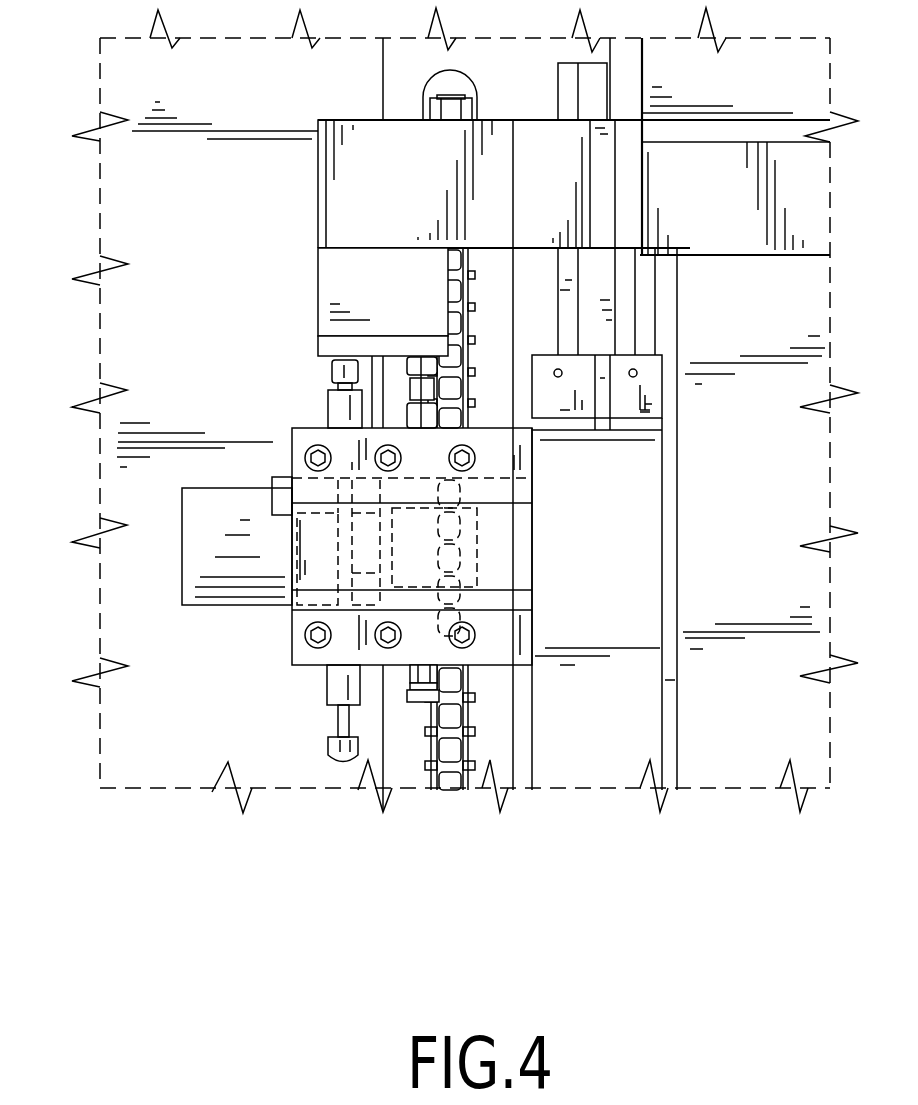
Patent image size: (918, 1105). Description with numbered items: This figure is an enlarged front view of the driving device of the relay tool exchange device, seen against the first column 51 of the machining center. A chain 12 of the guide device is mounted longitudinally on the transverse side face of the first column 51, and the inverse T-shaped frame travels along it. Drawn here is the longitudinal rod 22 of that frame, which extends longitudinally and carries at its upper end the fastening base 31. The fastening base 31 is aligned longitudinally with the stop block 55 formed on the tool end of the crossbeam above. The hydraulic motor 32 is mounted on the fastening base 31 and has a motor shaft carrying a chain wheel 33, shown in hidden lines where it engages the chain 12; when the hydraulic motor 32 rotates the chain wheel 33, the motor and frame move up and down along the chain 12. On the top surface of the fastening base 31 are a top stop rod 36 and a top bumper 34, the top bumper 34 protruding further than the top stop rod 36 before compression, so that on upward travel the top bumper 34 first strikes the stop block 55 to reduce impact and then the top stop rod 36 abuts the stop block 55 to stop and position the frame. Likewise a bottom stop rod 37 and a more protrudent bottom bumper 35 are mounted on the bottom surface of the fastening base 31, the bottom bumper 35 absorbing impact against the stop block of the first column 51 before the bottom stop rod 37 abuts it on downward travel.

The first column 51 is at (138, 93).
The stop block 55 is at (347, 287).
The top bumper 34 is at (343, 410).
The top stop rod 36 is at (428, 415).
The longitudinal rod 22 is at (647, 507).
The fastening base 31 is at (305, 617).
The chain wheel 33 is at (448, 545).
The hydraulic motor 32 is at (237, 590).
The chain 12 is at (450, 732).
The bottom stop rod 37 is at (413, 703).
The bottom bumper 35 is at (347, 750).